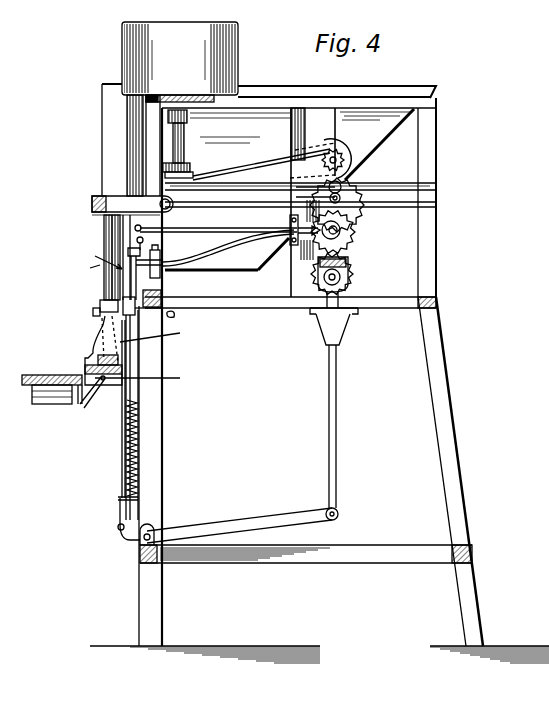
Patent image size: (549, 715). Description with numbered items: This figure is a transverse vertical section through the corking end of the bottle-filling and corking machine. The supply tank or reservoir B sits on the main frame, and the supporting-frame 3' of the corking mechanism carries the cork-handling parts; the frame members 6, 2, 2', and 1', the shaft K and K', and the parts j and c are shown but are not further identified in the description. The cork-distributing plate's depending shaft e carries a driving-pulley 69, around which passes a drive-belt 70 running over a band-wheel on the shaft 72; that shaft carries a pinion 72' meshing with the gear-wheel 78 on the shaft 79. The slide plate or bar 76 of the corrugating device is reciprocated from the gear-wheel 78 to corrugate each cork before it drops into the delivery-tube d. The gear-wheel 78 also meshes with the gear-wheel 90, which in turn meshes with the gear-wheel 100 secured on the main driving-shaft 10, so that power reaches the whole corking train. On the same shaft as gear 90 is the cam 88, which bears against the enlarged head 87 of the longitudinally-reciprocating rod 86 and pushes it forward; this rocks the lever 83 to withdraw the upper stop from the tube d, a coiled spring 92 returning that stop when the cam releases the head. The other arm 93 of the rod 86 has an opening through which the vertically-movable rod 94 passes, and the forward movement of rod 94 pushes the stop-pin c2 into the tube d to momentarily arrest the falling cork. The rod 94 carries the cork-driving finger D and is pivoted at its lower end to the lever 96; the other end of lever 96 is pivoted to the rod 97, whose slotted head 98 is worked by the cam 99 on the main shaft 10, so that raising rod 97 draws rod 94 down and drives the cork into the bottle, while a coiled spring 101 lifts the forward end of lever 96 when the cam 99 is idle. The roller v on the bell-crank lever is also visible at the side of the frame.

The drum 6 is at (180, 62).
The upright 2 is at (135, 145).
The slide plate or bar 76 is at (132, 205).
The depending shaft e is at (183, 136).
The driving-pulley 69 is at (192, 166).
The supply tank or reservoir B is at (458, 138).
The supporting-frame of the corking mechanism 3' is at (320, 142).
The brace 2' is at (379, 144).
The drive-belt 70 is at (261, 164).
The shaft K is at (300, 203).
The pinion 72' is at (332, 158).
The shaft 72 is at (324, 160).
The gear-wheel 78 is at (341, 205).
The shaft 79 is at (329, 187).
The longitudinally-reciprocating rod 86 is at (218, 223).
The enlarged head 87 is at (242, 242).
The cam 88 is at (331, 230).
The arm j is at (352, 228).
The gear-wheel 90 is at (350, 244).
The enlarged apertured or slotted head 98 is at (351, 282).
The gear-wheel 100 is at (350, 266).
The cam 99 is at (318, 272).
The main driving-shaft 10 is at (342, 300).
The rod 97 is at (343, 426).
The lever 96 is at (239, 526).
The lever 83 is at (117, 265).
The coiled spring 92 is at (148, 243).
The shaft K' is at (163, 246).
The stop-pin c2 is at (101, 255).
The delivery-tube d is at (107, 274).
The slide c is at (154, 268).
The arm of the rod 86 93 is at (228, 250).
The cork-driving finger D is at (137, 408).
The roller v is at (88, 350).
The vertically-movable rod 94 is at (122, 430).
The coiled spring 101 is at (124, 472).
The frame leg 1' is at (319, 373).